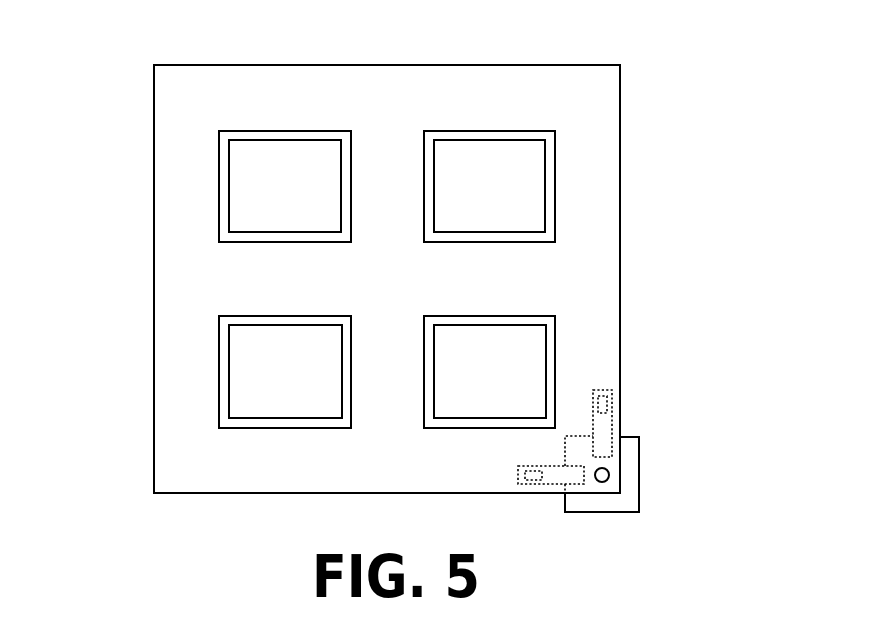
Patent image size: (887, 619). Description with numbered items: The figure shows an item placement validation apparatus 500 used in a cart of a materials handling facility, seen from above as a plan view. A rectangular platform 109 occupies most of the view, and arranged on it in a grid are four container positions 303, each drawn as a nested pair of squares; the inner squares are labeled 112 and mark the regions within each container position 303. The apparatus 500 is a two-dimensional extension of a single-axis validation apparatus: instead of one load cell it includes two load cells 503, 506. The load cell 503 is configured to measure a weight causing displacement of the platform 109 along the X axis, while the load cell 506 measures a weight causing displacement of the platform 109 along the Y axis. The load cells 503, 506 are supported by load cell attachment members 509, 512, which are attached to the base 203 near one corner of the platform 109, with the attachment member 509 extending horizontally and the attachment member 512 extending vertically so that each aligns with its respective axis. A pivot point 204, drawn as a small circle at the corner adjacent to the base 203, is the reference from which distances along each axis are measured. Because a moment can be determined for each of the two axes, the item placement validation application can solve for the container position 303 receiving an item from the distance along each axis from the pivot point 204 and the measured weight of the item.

The platform 109 is at (210, 447).
The ultrasonic transducer 112 is at (285, 160).
The container position 303 is at (223, 148).
The item placement validation apparatus 500 is at (658, 93).
The base 203 is at (630, 502).
The pivot point 204 is at (603, 483).
The load cell 503 is at (530, 480).
The load cell 506 is at (602, 402).
The load cell attachment member 509 is at (555, 477).
The load cell attachment member 512 is at (601, 437).